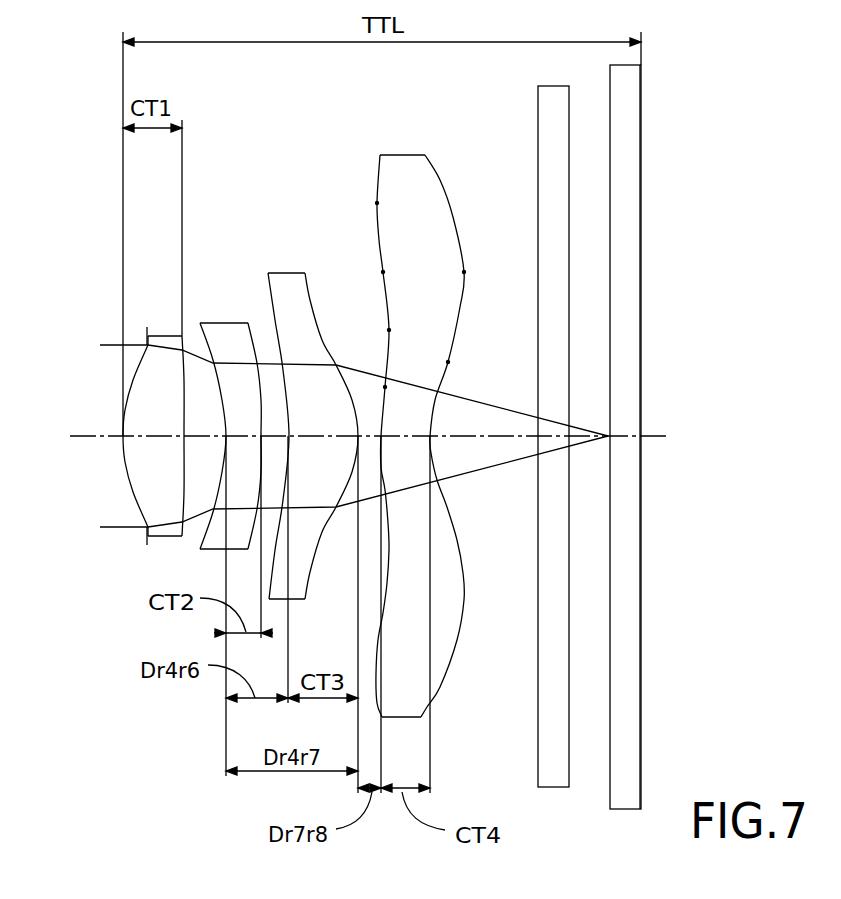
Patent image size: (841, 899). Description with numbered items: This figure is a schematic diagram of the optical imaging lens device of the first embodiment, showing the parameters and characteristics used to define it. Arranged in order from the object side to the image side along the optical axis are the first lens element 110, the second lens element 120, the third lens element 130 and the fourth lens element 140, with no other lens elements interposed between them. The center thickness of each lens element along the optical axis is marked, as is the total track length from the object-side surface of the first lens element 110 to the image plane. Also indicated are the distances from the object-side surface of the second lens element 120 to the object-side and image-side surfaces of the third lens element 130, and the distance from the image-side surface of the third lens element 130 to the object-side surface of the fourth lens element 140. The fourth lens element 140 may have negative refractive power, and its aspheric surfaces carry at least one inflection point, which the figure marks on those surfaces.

The first lens element 110 is at (167, 335).
The second lens element 120 is at (220, 322).
The third lens element 130 is at (283, 271).
The fourth lens element 140 is at (401, 155).